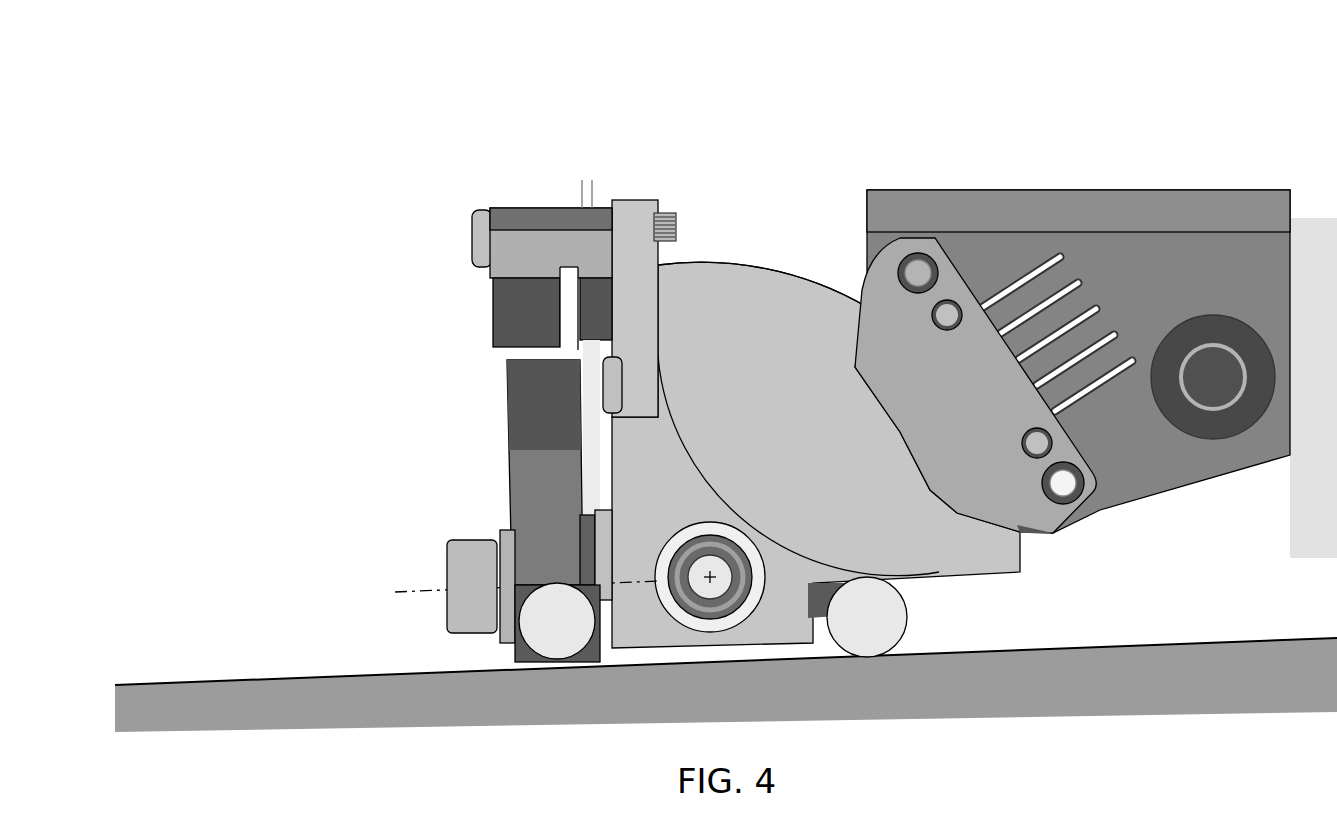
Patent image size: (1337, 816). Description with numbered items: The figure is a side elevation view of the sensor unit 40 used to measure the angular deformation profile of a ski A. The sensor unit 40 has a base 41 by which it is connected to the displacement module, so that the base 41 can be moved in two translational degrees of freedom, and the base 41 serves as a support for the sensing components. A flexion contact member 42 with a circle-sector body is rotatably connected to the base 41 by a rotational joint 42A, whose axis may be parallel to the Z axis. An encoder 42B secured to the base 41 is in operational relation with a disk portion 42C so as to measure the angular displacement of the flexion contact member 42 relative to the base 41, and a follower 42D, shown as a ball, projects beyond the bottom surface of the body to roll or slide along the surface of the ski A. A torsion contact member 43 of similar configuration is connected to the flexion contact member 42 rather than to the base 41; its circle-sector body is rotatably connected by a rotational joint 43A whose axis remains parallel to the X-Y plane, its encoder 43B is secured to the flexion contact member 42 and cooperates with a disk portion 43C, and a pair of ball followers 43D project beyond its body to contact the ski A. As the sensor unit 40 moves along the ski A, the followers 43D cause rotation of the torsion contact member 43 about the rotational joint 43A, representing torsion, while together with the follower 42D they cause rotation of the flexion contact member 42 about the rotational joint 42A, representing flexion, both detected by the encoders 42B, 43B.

The sensor unit 40 is at (732, 430).
The base 41 is at (920, 200).
The flexion contact member 42 is at (615, 445).
The rotational joint 42A is at (710, 577).
The encoder 42B is at (1010, 490).
The disk portion 42C is at (797, 331).
The follower 42D is at (867, 630).
The torsion contact member 43 is at (465, 466).
The rotational joint 43A is at (447, 600).
The encoder 43B is at (490, 314).
The disk portion 43C is at (567, 280).
The followers 43D is at (593, 640).
The ski A is at (217, 688).